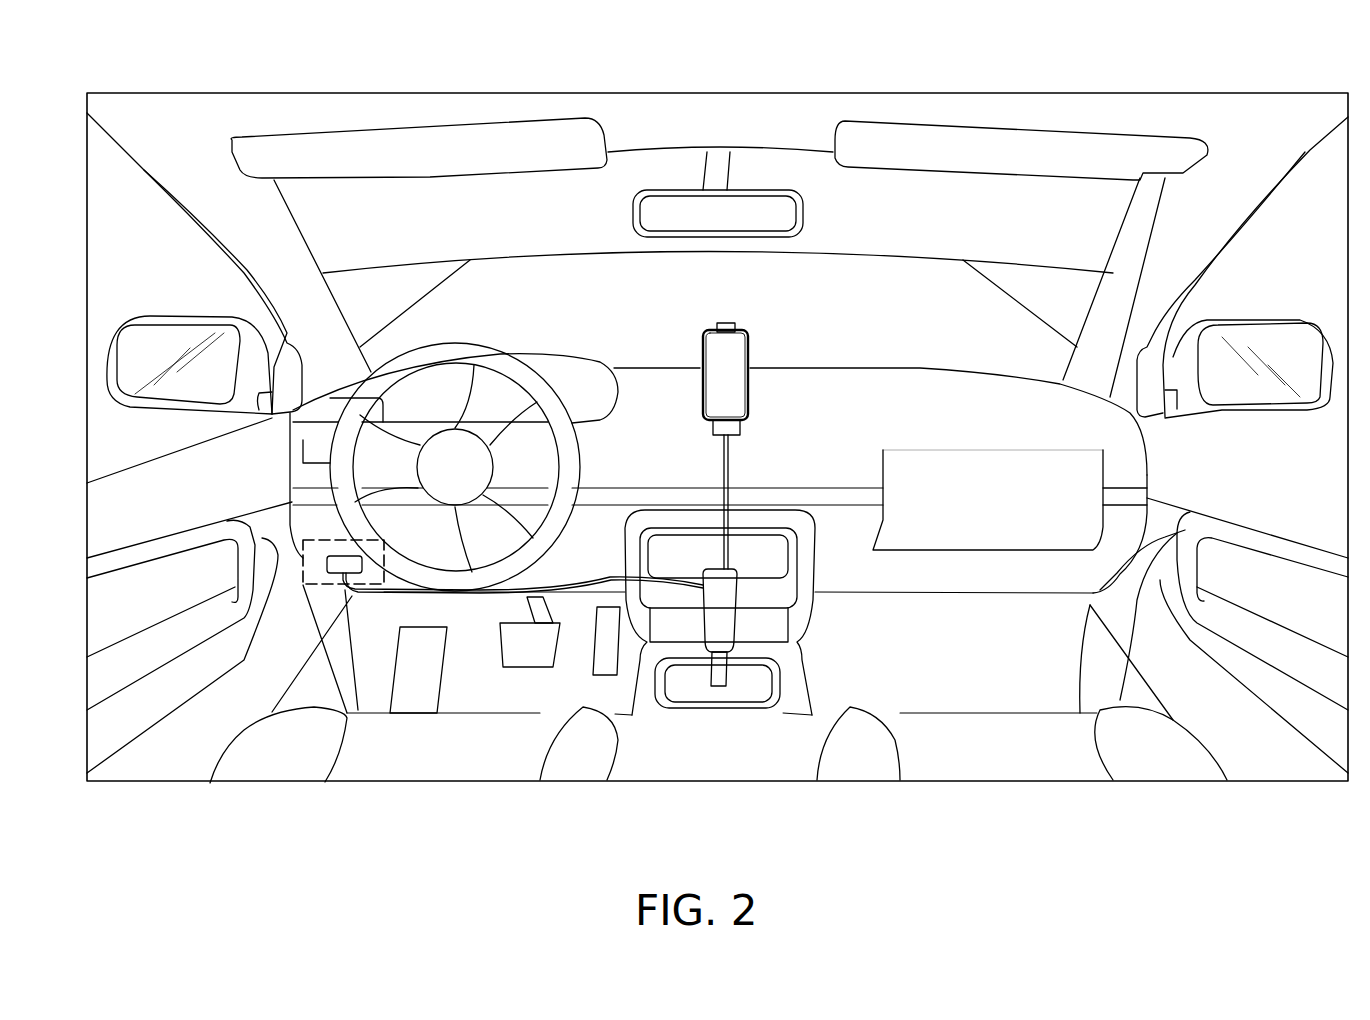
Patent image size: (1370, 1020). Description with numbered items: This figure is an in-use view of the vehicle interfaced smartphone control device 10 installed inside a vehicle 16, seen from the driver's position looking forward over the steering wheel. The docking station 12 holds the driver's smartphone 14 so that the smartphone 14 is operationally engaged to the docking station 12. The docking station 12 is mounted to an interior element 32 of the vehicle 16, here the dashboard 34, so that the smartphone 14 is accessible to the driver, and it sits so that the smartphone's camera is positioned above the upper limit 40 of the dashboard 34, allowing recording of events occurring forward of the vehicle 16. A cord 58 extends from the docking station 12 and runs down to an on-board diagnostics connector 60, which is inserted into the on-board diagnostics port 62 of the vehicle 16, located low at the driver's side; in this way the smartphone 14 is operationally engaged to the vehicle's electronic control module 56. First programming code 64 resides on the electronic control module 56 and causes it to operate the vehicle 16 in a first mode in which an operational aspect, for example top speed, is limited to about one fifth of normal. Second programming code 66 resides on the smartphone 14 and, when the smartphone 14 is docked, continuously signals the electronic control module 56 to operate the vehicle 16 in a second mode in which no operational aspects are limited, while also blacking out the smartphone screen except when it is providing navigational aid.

The vehicle interfaced smartphone control device 10 is at (702, 76).
The docking station 12 is at (722, 315).
The smartphone 14 is at (745, 347).
The vehicle 16 is at (1233, 175).
The interior element 32 is at (802, 395).
The dashboard 34 is at (945, 410).
The upper limit 40 is at (906, 366).
The electronic control module 56 is at (313, 562).
The cord 58 is at (608, 570).
The on-board diagnostics connector 60 is at (368, 555).
The on-board diagnostics port 62 is at (327, 545).
The first programming code 64 is at (373, 580).
The second programming code 66 is at (712, 382).